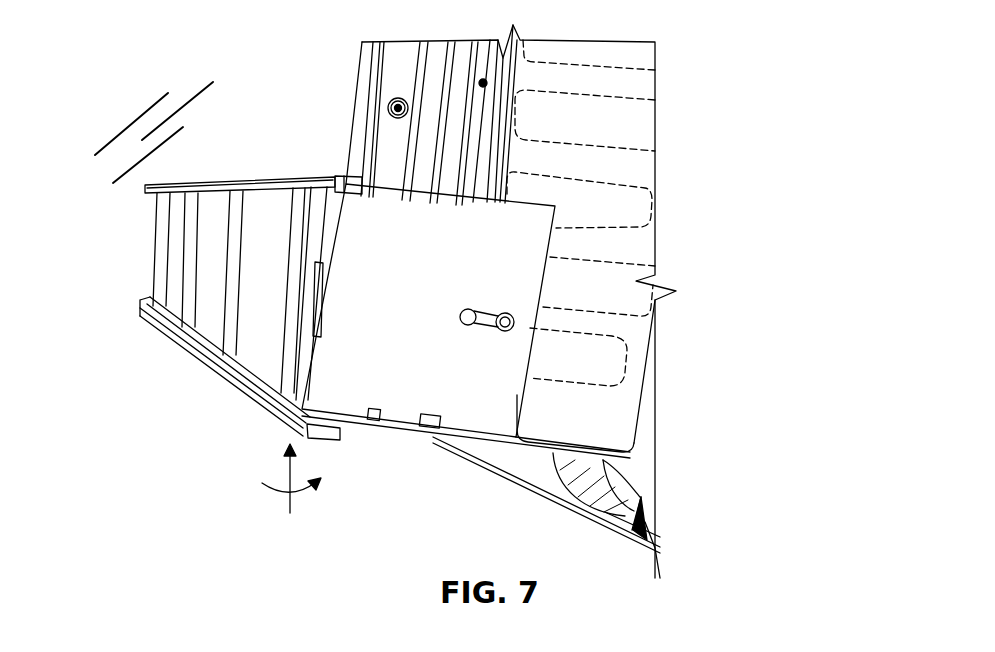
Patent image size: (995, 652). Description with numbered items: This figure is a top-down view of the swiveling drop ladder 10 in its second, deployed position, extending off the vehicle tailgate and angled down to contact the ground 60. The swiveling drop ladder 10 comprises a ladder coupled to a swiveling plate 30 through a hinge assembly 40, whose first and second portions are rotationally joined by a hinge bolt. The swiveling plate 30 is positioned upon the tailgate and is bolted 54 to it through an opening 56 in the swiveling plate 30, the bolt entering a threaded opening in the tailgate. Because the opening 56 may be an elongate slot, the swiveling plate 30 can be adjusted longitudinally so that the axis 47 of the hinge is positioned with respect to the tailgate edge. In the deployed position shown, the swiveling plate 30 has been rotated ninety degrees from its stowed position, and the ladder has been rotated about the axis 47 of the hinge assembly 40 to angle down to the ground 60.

The swiveling drop ladder 10 is at (252, 38).
The swiveling plate 30 is at (387, 376).
The hinge assembly 40 is at (323, 162).
The axis of the hinge bolt 47 is at (291, 493).
The bolt 54 is at (499, 331).
The opening 56 is at (470, 310).
The ground 60 is at (109, 219).